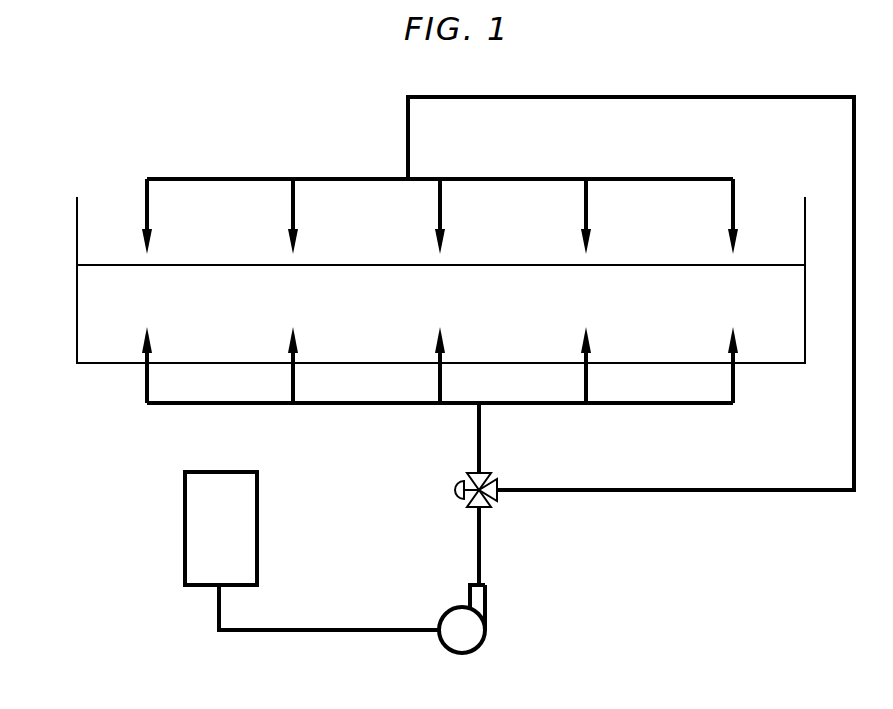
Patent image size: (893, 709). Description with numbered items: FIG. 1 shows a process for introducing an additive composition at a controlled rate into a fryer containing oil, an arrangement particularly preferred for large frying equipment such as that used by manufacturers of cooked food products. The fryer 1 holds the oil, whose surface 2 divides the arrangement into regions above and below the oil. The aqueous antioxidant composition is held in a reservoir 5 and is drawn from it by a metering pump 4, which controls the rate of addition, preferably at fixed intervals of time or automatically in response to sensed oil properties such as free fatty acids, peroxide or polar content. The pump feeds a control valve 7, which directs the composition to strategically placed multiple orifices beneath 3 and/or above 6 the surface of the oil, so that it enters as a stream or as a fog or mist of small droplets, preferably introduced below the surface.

The tank / basin 1 is at (77, 223).
The membrane / treatment layer 2 is at (213, 278).
The orifices beneath the surface of the oil 3 is at (651, 406).
The metering pump 4 is at (487, 630).
The reservoir 5 is at (185, 502).
The orifices above the surface of the oil 6 is at (514, 180).
The control valve 7 is at (484, 500).